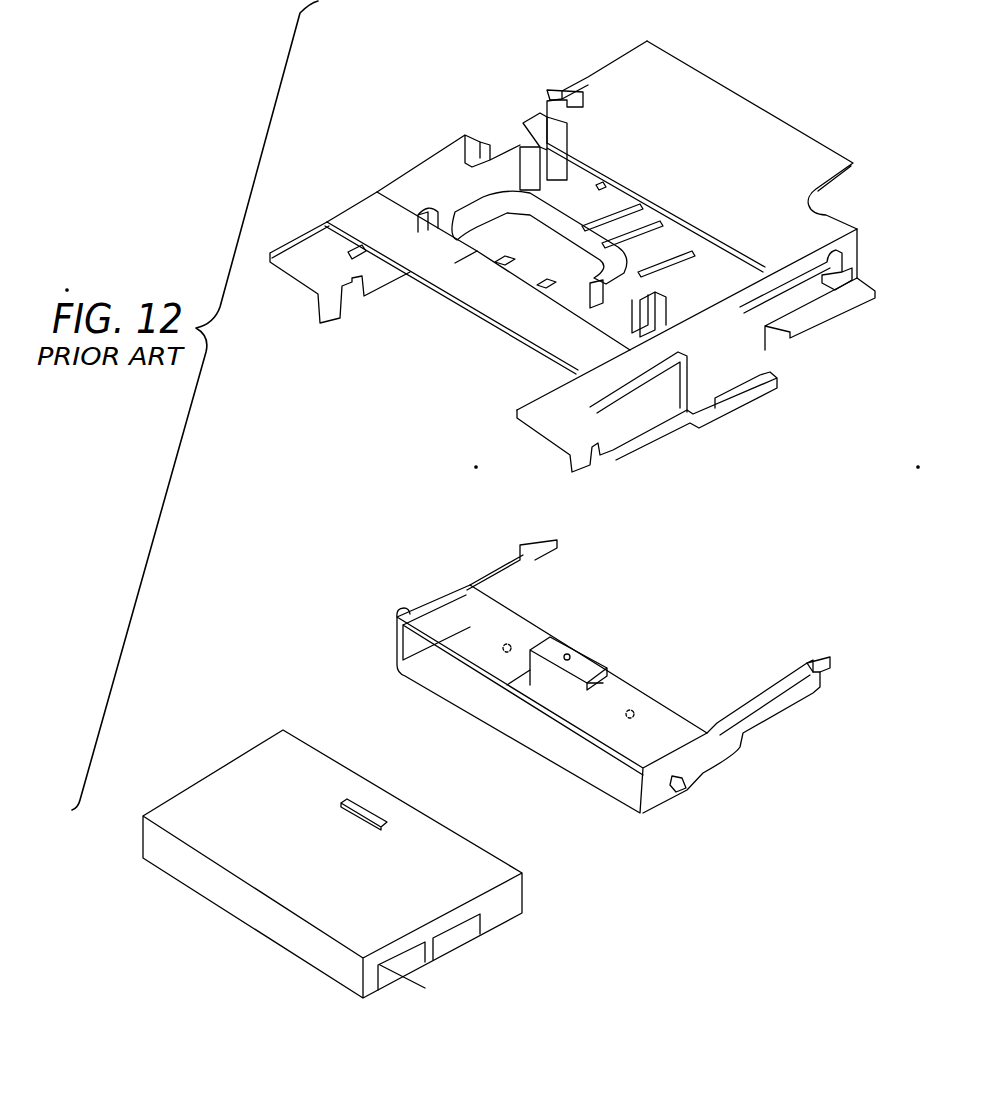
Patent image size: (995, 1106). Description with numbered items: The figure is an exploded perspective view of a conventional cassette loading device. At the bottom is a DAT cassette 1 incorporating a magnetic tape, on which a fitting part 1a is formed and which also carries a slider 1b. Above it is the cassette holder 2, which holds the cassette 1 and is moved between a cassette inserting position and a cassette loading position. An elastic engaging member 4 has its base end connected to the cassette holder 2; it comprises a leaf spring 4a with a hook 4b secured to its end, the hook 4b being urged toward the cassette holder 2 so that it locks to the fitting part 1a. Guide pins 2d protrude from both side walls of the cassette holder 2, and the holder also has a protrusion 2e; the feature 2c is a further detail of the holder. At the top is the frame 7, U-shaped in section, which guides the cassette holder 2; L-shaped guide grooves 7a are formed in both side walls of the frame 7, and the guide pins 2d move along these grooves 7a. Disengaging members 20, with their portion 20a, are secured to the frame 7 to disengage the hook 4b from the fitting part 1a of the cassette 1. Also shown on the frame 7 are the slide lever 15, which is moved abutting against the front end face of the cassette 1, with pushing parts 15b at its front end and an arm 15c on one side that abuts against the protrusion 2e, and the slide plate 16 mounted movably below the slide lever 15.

The DAT cassette 1 is at (280, 930).
The fitting part 1a is at (345, 800).
The slider 1b is at (480, 927).
The cassette holder 2 is at (493, 727).
The holes 2c is at (512, 645).
The guide pins 2d is at (400, 612).
The protrusion 2e is at (800, 673).
The elastic engaging member 4 is at (560, 648).
The leaf spring 4a is at (473, 707).
The hook 4b is at (592, 668).
The frame 7 is at (597, 80).
The L-shaped guide grooves 7a is at (420, 200).
The slide lever 15 is at (482, 196).
The pushing parts 15b is at (580, 307).
The arm 15c is at (647, 317).
The slide plate 16 is at (573, 190).
The disengaging members 20 is at (538, 286).
The strip plate 20a is at (470, 253).